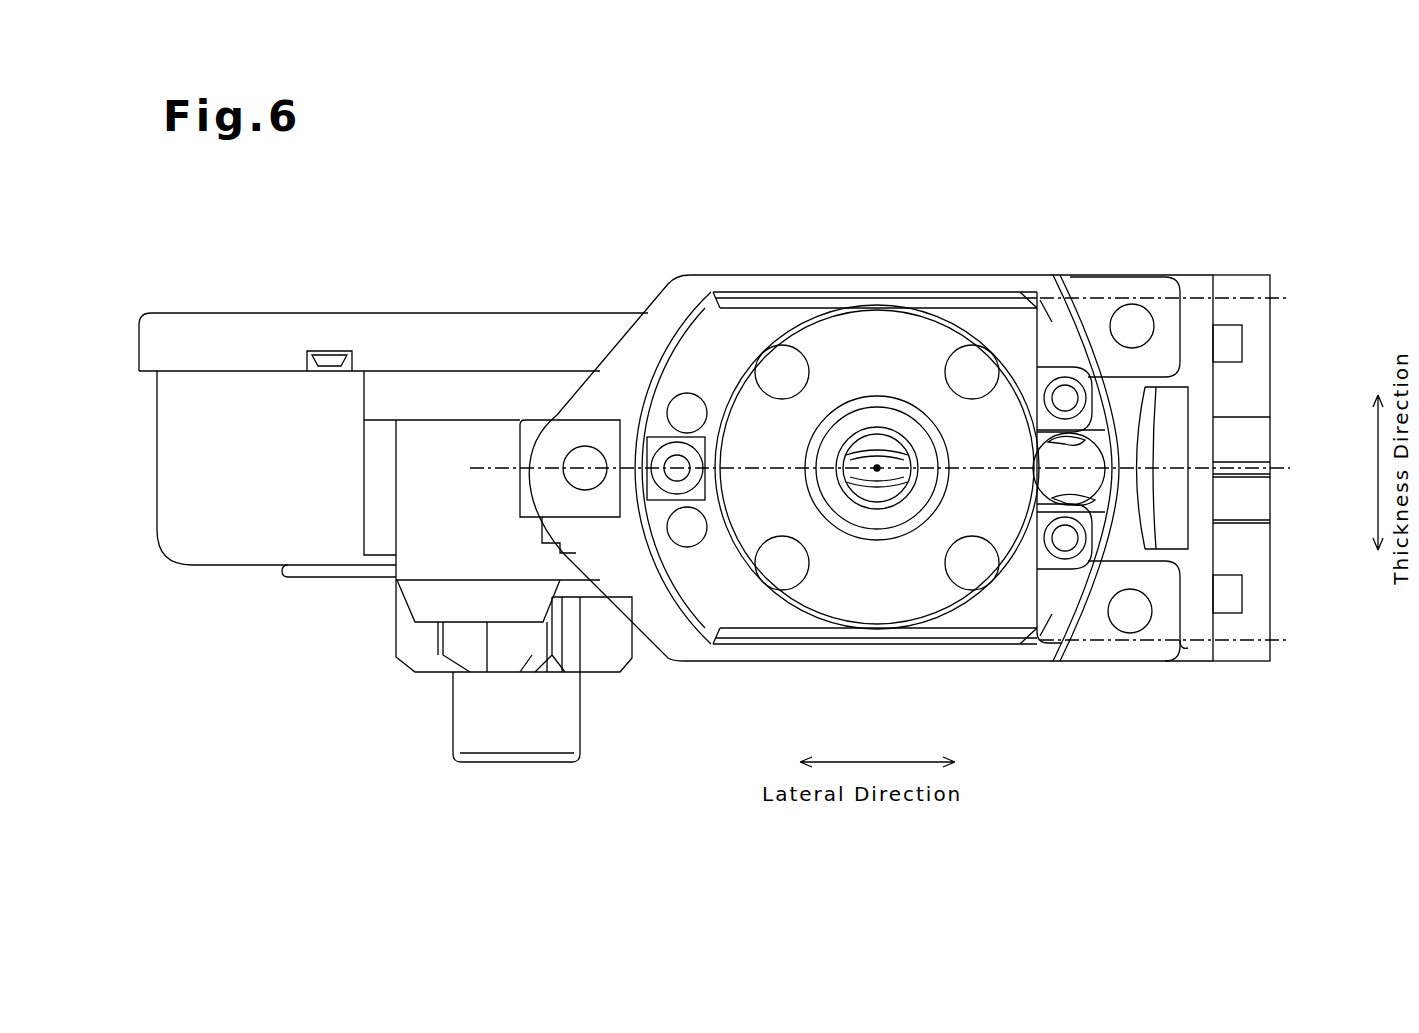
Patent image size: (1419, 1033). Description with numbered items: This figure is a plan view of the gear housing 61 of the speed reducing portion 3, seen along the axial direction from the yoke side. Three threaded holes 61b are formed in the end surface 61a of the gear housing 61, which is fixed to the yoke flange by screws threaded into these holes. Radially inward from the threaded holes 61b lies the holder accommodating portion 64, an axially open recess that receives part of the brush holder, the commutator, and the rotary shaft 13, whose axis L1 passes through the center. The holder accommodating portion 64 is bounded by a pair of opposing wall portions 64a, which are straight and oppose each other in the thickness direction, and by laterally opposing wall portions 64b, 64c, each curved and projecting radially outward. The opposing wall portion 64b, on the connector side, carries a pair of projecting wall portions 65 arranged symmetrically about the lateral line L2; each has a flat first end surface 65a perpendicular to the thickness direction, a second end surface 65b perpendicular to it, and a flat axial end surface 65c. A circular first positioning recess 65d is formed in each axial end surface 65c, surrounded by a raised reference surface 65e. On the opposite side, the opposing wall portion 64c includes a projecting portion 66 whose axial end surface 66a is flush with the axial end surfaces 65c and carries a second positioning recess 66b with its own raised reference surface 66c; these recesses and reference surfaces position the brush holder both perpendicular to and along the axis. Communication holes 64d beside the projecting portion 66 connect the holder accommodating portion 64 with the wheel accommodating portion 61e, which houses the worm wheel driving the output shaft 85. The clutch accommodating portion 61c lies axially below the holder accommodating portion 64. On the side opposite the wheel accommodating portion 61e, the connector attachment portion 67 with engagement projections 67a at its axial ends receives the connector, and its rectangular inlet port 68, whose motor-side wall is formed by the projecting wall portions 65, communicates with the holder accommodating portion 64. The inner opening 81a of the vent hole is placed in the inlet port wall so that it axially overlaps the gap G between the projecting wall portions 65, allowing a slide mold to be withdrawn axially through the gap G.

The speed reducing portion 3 is at (1307, 246).
The rotary shaft 13 is at (877, 472).
The gear housing 61 is at (1336, 303).
The end surface 61a is at (1162, 290).
The threaded holes 61b is at (572, 478).
The clutch accommodating portion 61c is at (893, 309).
The wheel accommodating portion 61e is at (232, 565).
The holder accommodating portion 64 is at (751, 302).
The opposing wall portions 64a is at (816, 283).
The opposing wall portion 64b is at (1150, 409).
The opposing wall portion 64c is at (640, 362).
The communication holes 64d is at (697, 413).
The projecting wall portions 65 is at (1074, 482).
The first end surface 65a is at (1050, 432).
The second end surface 65b is at (1022, 300).
The axial end surface 65c is at (1053, 292).
The first positioning recess 65d is at (1048, 362).
The reference surface 65e is at (1075, 395).
The projecting portion 66 is at (712, 447).
The axial end surface 66a is at (640, 440).
The second positioning recess 66b is at (700, 488).
The reference surface 66c is at (645, 522).
The connector attachment portion 67 is at (1272, 565).
The engagement projections 67a is at (1242, 342).
The inlet port 68 is at (1187, 650).
The inner opening 81a is at (1150, 490).
The output shaft 85 is at (410, 656).
The gap G is at (1067, 453).
The axis L1 is at (877, 466).
The lateral line L2 is at (1272, 468).